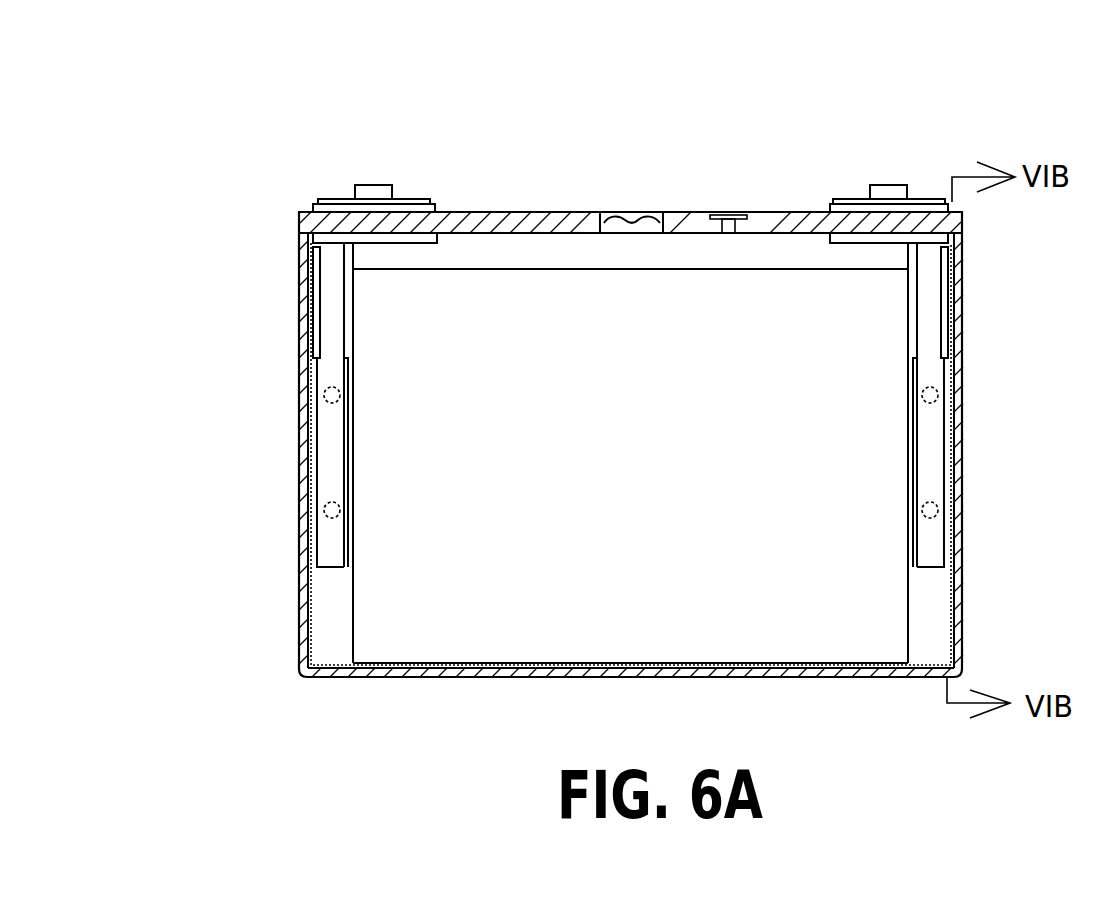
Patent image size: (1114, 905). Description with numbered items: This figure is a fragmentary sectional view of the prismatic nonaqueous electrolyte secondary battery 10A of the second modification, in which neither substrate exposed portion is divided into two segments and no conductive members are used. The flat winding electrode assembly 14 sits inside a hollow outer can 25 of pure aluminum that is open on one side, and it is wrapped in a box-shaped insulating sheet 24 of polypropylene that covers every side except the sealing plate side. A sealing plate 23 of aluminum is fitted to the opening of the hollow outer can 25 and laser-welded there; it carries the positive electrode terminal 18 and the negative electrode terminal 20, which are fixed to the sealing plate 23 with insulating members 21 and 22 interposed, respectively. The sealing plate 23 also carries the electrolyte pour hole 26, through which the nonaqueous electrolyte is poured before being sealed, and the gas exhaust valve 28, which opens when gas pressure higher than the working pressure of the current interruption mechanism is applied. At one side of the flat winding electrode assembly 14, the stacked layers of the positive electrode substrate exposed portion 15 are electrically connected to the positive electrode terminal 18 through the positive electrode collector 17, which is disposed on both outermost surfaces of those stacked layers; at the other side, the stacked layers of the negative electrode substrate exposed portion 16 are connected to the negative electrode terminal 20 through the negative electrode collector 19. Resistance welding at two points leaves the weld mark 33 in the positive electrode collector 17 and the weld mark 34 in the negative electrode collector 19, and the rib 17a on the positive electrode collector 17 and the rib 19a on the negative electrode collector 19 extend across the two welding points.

The prismatic nonaqueous electrolyte secondary battery 10A is at (258, 104).
The flat winding electrode assembly 14 is at (610, 597).
The positive electrode substrate exposed portion 15 is at (928, 607).
The negative electrode substrate exposed portion 16 is at (325, 590).
The positive electrode collector 17 is at (928, 436).
The rib 17a is at (915, 541).
The positive electrode terminal 18 is at (889, 193).
The negative electrode collector 19 is at (328, 453).
The rib 19a is at (352, 371).
The negative electrode terminal 20 is at (372, 193).
The insulating member 21 is at (829, 211).
The insulating member 22 is at (434, 208).
The sealing plate 23 is at (525, 224).
The insulating sheet 24 is at (317, 645).
The hollow outer can 25 is at (770, 675).
The electrolyte pour hole 26 is at (722, 216).
The gas exhaust valve 28 is at (609, 219).
The weld mark 33 is at (939, 510).
The weld mark 34 is at (325, 395).